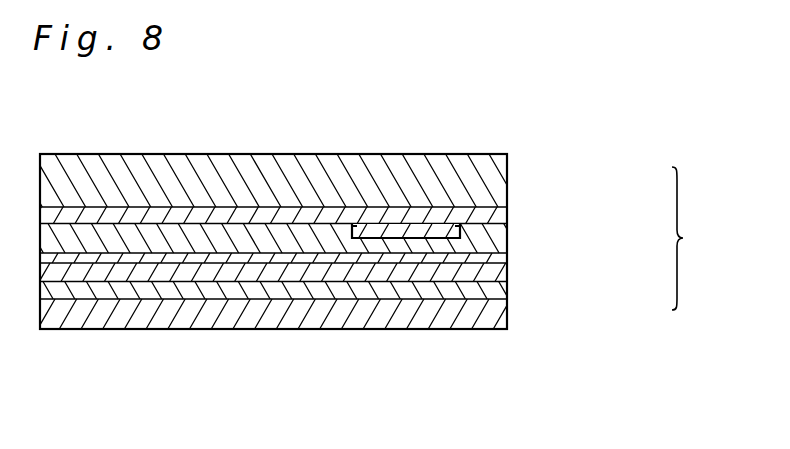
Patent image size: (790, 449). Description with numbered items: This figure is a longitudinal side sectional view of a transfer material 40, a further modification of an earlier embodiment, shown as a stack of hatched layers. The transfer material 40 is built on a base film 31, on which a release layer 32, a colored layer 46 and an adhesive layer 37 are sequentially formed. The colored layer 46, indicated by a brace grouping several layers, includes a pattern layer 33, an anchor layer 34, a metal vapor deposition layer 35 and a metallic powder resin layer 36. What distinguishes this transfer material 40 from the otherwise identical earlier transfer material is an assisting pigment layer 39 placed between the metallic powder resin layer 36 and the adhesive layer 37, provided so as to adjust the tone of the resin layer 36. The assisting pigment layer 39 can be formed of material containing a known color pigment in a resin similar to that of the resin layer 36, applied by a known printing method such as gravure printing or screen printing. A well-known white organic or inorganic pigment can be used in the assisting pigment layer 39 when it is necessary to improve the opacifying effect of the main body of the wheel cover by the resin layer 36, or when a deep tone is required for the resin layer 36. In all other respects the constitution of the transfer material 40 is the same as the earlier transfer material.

The transfer material 40 is at (264, 151).
The base film 31 is at (507, 155).
The release layer 32 is at (507, 208).
The pattern layer 33 is at (507, 227).
The anchor layer 34 is at (507, 238).
The metal vapor deposition layer 35 is at (507, 255).
The metallic powder resin layer 36 is at (507, 268).
The assisting pigment layer 39 is at (507, 288).
The adhesive layer 37 is at (507, 325).
The colored layer 46 is at (701, 238).